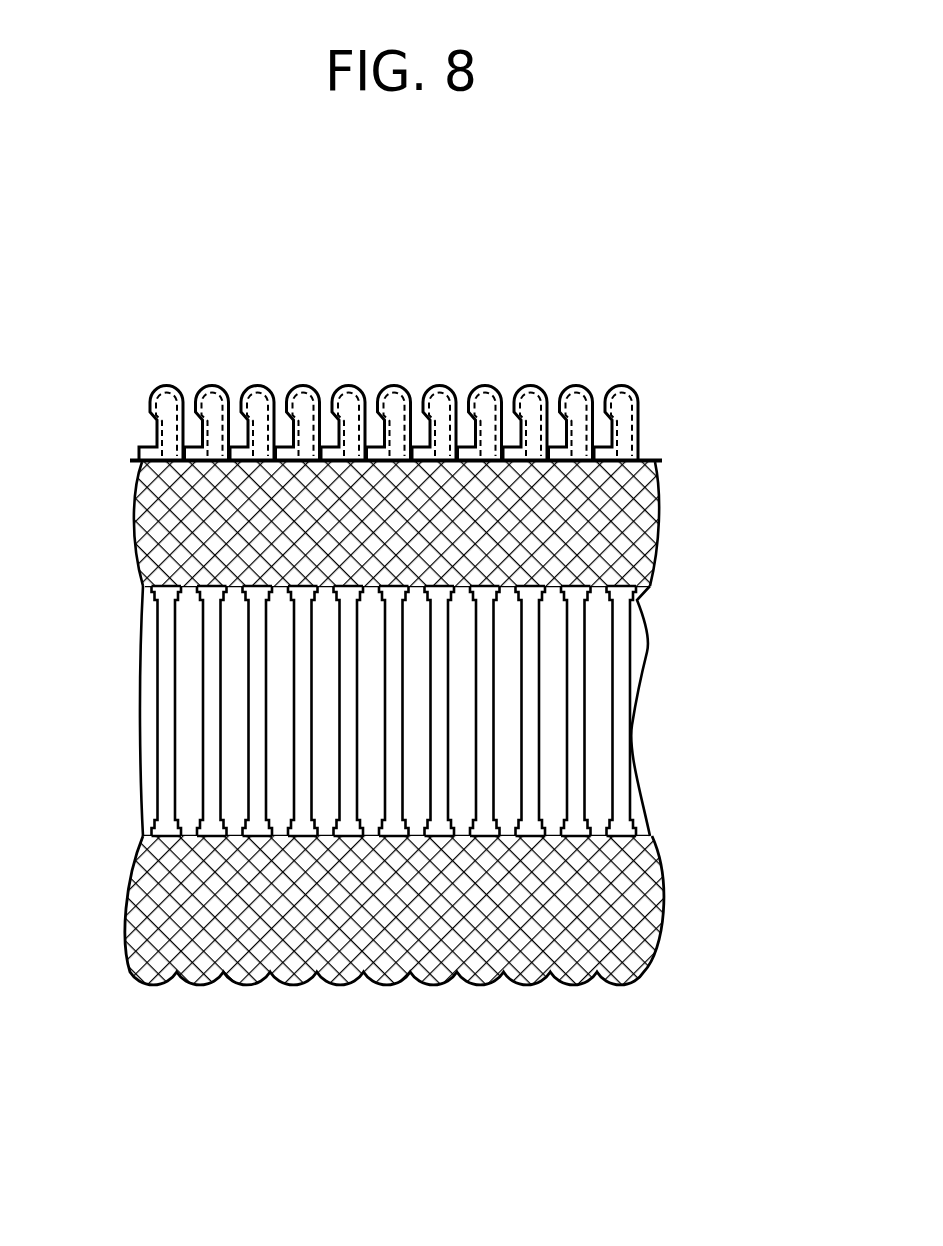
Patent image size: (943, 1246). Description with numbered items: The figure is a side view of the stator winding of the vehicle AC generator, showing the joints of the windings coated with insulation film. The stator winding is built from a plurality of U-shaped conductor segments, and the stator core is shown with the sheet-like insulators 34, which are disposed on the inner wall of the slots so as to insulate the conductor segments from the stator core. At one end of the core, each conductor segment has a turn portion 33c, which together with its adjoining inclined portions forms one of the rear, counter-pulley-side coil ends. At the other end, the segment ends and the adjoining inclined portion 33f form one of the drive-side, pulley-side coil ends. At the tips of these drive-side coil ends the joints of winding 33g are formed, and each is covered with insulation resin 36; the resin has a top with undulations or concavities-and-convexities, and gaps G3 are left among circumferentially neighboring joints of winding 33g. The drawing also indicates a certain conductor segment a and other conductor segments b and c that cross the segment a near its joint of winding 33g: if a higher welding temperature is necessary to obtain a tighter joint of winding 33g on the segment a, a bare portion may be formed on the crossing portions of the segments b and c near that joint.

The inclined portion 33f is at (138, 480).
The insulators 34 is at (150, 590).
The turn portion 33c is at (159, 988).
The insulation resin 36 is at (616, 384).
The joint of winding 33g is at (643, 407).
The gap G3 is at (548, 420).
The conductor segment a is at (370, 460).
The conductor segment b is at (412, 472).
The conductor segment c is at (457, 470).